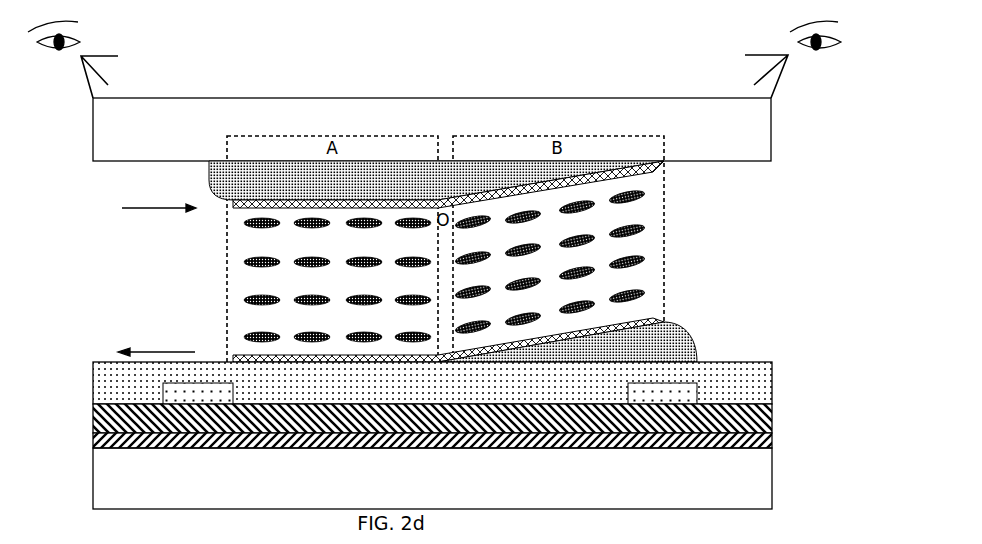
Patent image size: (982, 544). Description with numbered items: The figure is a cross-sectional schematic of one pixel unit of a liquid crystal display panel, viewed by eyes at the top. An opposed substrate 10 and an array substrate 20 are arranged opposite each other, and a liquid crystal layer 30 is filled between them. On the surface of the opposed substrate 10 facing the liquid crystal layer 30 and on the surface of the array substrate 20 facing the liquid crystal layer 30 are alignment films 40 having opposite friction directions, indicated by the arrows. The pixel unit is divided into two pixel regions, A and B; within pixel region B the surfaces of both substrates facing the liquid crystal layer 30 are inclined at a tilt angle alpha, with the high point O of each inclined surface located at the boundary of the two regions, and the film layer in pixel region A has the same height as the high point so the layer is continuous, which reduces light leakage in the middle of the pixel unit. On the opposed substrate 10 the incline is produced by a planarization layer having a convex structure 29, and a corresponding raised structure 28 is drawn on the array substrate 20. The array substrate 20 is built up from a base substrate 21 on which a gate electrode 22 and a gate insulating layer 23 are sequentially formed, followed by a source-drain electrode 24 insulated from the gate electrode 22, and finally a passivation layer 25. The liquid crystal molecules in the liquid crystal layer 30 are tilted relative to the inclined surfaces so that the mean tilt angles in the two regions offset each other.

The opposed substrate 10 is at (745, 132).
The array substrate 20 is at (476, 429).
The base substrate 21 is at (450, 478).
The gate electrode 22 is at (713, 442).
The gate insulating layer 23 is at (772, 418).
The source-drain electrode 24 is at (185, 392).
The passivation layer 25 is at (772, 382).
The lower wedge spacer 28 is at (697, 341).
The convex structure 29 is at (209, 172).
The liquid crystal layer 30 is at (688, 173).
The alignment film 40 is at (233, 208).